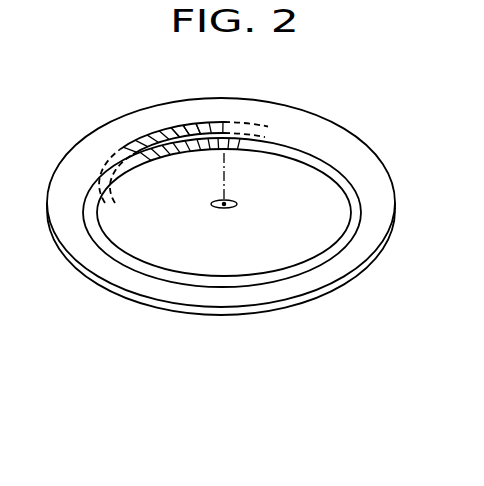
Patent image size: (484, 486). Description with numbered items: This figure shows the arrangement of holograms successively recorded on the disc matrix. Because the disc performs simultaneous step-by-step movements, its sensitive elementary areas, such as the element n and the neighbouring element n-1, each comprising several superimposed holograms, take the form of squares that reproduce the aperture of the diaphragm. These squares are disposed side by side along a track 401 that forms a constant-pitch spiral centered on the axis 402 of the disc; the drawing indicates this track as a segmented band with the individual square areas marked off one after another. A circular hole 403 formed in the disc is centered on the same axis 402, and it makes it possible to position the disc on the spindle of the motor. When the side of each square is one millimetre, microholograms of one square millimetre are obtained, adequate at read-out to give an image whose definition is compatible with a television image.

The track 401 is at (101, 177).
The axis 402 is at (223, 182).
The circular hole 403 is at (237, 204).
The element n is at (170, 132).
The track segment n-1 is at (181, 132).